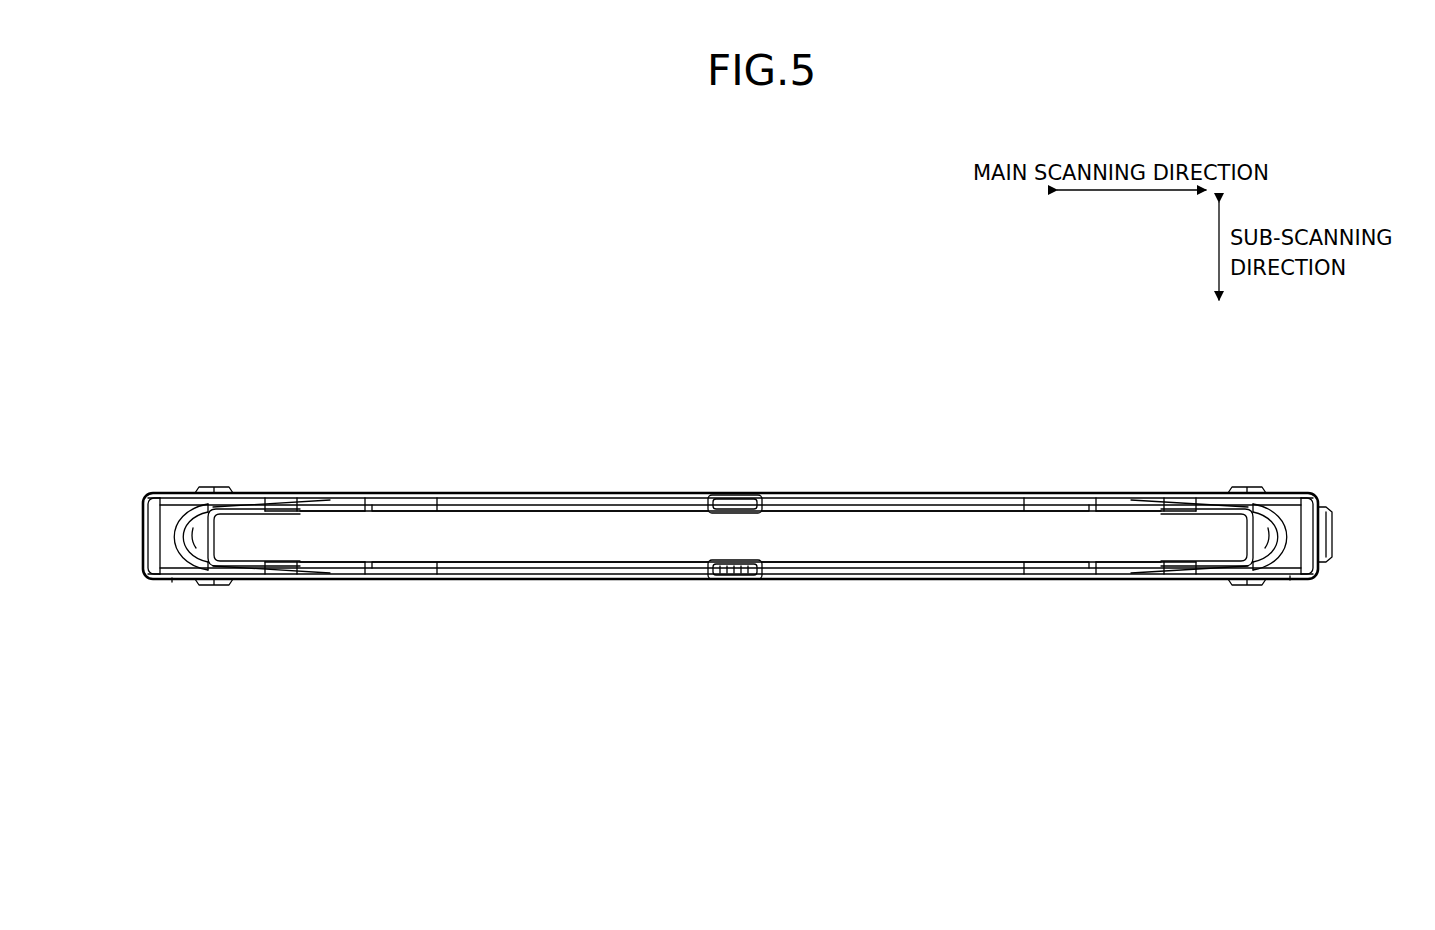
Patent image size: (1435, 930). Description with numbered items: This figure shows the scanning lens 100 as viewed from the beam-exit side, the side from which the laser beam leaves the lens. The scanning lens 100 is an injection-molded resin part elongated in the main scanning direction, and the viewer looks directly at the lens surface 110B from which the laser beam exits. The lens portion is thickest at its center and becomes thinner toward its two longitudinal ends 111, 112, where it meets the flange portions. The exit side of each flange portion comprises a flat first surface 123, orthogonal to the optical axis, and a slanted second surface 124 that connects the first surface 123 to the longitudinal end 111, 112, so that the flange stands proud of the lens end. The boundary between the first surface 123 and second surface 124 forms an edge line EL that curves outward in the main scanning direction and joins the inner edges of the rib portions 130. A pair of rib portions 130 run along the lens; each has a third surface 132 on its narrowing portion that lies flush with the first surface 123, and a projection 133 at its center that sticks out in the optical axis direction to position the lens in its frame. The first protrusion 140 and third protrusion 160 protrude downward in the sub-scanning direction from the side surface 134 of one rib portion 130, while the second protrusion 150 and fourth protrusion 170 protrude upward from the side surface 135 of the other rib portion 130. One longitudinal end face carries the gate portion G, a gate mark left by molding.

The scanning lens 100 is at (942, 400).
The lens surface 110B is at (833, 540).
The longitudinal end 111 is at (1279, 553).
The longitudinal end 112 is at (175, 562).
The first surface 123 is at (165, 533).
The second surface 124 is at (195, 532).
The rib portion 130 is at (540, 492).
The third surface 132 is at (257, 493).
The projection 133 is at (734, 495).
The side surface 134 is at (410, 580).
The side surface 135 is at (407, 493).
The first protrusion 140 is at (220, 585).
The second protrusion 150 is at (216, 487).
The third protrusion 160 is at (1255, 585).
The fourth protrusion 170 is at (1248, 488).
The edge line EL is at (172, 582).
The gate portion G is at (1334, 565).